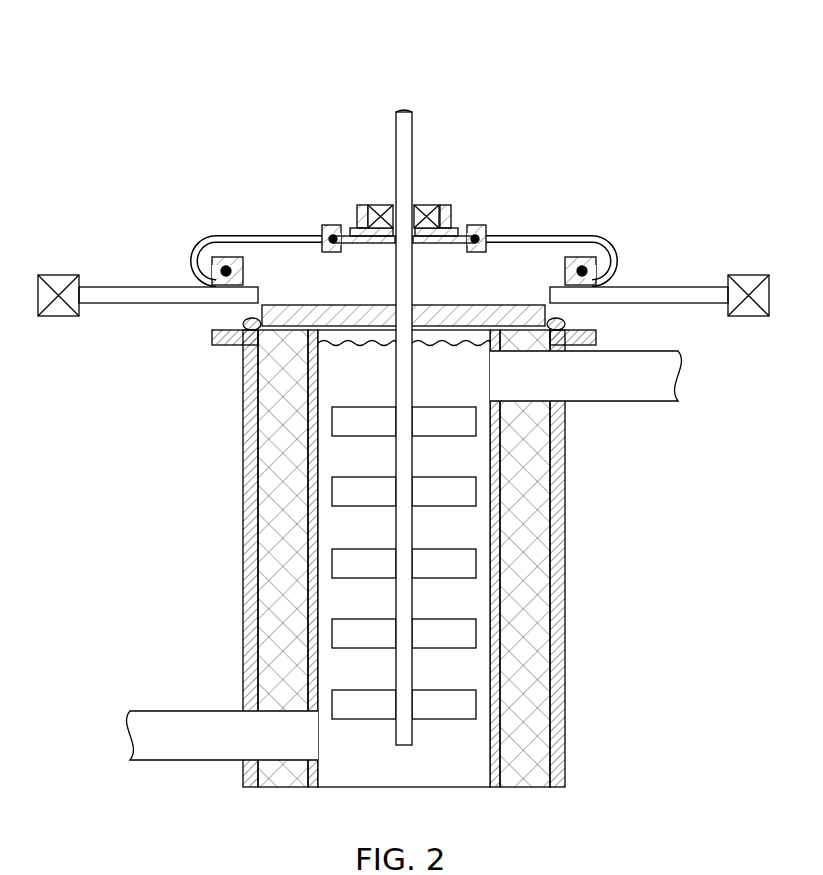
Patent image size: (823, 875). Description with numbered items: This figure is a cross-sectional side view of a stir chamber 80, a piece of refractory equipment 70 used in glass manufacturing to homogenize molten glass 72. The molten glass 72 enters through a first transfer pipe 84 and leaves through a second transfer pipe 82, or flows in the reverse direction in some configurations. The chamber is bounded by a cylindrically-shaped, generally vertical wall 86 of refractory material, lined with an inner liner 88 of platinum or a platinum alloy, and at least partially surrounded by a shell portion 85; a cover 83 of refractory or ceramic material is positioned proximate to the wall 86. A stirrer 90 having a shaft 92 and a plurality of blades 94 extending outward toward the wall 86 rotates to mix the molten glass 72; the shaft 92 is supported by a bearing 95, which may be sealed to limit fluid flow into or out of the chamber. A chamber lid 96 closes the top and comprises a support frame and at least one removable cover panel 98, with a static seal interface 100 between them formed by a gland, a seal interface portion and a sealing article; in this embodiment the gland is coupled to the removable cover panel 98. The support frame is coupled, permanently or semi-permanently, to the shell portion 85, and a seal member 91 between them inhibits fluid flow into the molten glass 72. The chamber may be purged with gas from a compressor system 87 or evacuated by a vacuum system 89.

The refractory equipment 70 is at (211, 47).
The molten glass 72 is at (325, 387).
The stir chamber 80 is at (635, 111).
The second transfer pipe 82 is at (165, 760).
The cover 83 is at (510, 305).
The first transfer pipe 84 is at (638, 401).
The shell portion 85 is at (566, 655).
The wall 86 is at (530, 788).
The compressor system 87 is at (58, 275).
The inner liner 88 is at (318, 780).
The vacuum system 89 is at (438, 416).
The stirrer 90 is at (458, 127).
The seal member 91 is at (248, 331).
The shaft 92 is at (413, 185).
The blades 94 is at (440, 498).
The bearing 95 is at (380, 205).
The chamber lid 96 is at (524, 154).
The removable cover panel 98 is at (403, 232).
The static seal interface 100 is at (406, 219).